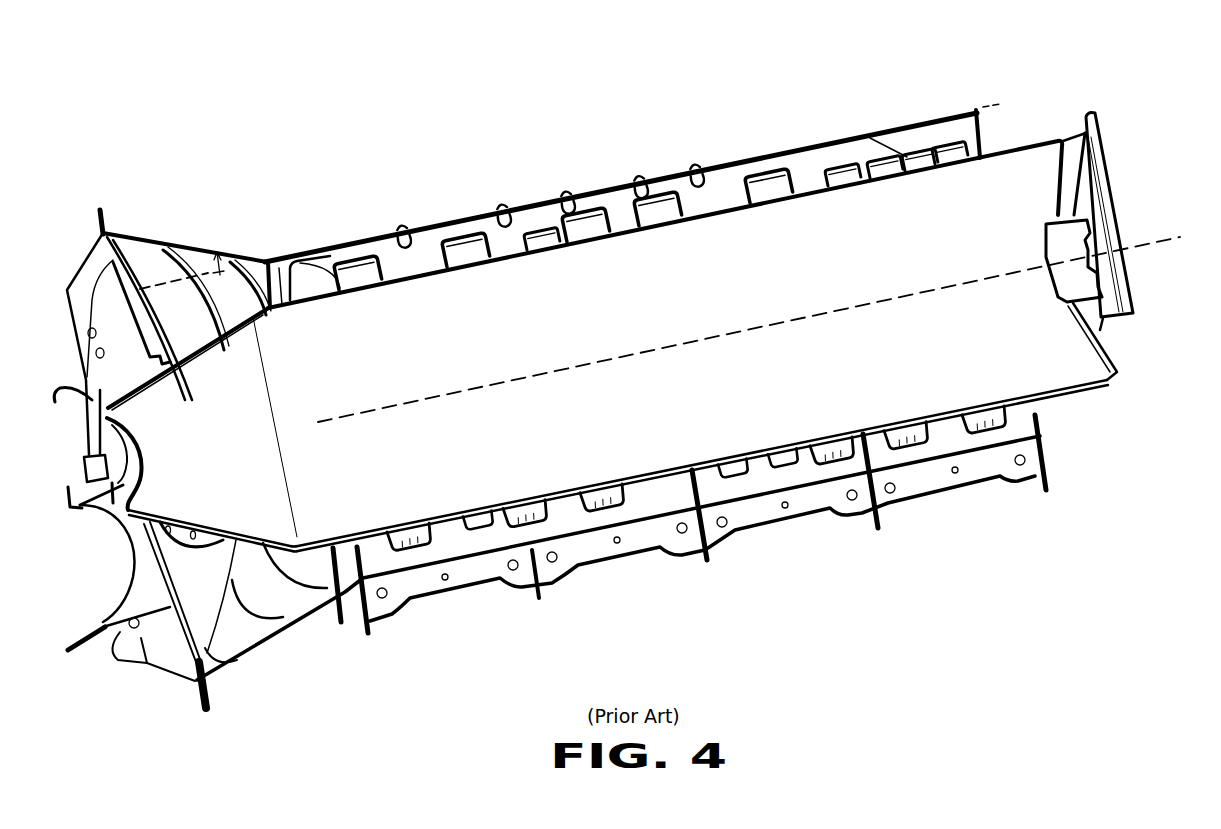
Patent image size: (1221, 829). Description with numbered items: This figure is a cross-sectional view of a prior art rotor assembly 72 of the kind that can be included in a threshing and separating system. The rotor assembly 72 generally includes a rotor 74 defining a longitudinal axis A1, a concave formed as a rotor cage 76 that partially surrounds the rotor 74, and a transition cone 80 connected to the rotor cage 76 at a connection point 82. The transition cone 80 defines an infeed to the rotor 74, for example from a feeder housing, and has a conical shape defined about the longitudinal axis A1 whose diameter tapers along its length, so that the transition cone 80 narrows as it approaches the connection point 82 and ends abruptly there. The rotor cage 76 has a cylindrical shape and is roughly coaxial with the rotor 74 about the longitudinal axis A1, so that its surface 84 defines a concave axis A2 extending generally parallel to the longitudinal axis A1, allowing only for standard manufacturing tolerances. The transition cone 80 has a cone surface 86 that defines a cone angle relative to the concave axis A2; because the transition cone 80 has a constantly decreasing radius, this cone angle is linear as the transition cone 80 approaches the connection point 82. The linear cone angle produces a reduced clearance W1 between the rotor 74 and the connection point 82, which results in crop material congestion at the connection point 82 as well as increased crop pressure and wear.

The rotor assembly 72 is at (700, 63).
The rotor 74 is at (993, 146).
The rotor cage 76 is at (480, 216).
The transition cone 80 is at (143, 237).
The connection point 82 is at (266, 263).
The surface 84 is at (403, 227).
The cone surface 86 is at (171, 255).
The longitudinal axis A1 is at (1143, 240).
The concave axis A2 is at (200, 272).
The clearance W1 is at (270, 427).